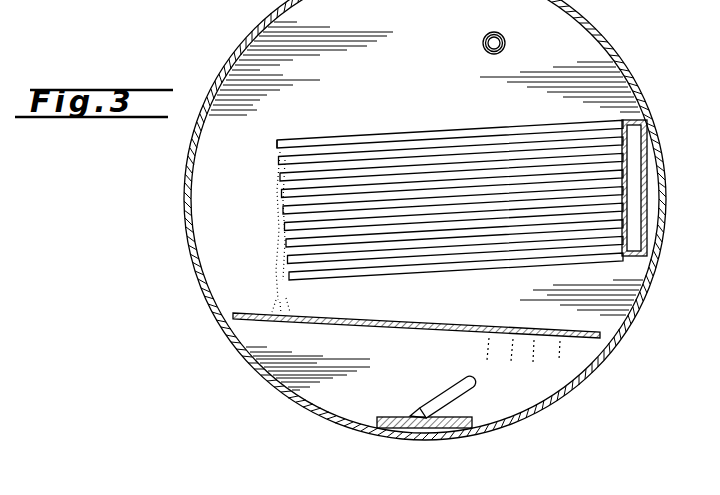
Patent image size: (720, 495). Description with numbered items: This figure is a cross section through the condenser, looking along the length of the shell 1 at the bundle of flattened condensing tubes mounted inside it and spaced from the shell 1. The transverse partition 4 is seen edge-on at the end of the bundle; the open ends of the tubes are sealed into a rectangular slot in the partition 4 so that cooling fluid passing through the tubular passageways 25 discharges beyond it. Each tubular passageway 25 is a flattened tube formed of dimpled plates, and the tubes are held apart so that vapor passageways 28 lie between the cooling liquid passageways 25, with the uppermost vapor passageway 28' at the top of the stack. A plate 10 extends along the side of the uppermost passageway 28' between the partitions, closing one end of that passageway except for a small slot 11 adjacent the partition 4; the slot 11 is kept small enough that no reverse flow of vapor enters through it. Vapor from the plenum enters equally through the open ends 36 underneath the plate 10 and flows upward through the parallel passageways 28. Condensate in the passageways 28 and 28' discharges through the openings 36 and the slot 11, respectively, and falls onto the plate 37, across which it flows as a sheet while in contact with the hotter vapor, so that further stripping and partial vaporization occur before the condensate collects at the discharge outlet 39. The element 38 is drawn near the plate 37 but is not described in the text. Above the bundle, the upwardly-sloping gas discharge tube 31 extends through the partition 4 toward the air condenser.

The shell 1 is at (618, 46).
The transverse partition 4 is at (434, 83).
The plate 10 is at (277, 145).
The slot 11 is at (278, 155).
The tubular passageway 25 is at (439, 203).
The vapor passageway 28 is at (456, 280).
The uppermost vapor passageway 28' is at (450, 124).
The gas discharge tube 31 is at (506, 40).
The open ends 36 is at (289, 270).
The plate 37 is at (438, 323).
The discharge stream 38 is at (490, 331).
The discharge outlet 39 is at (410, 417).